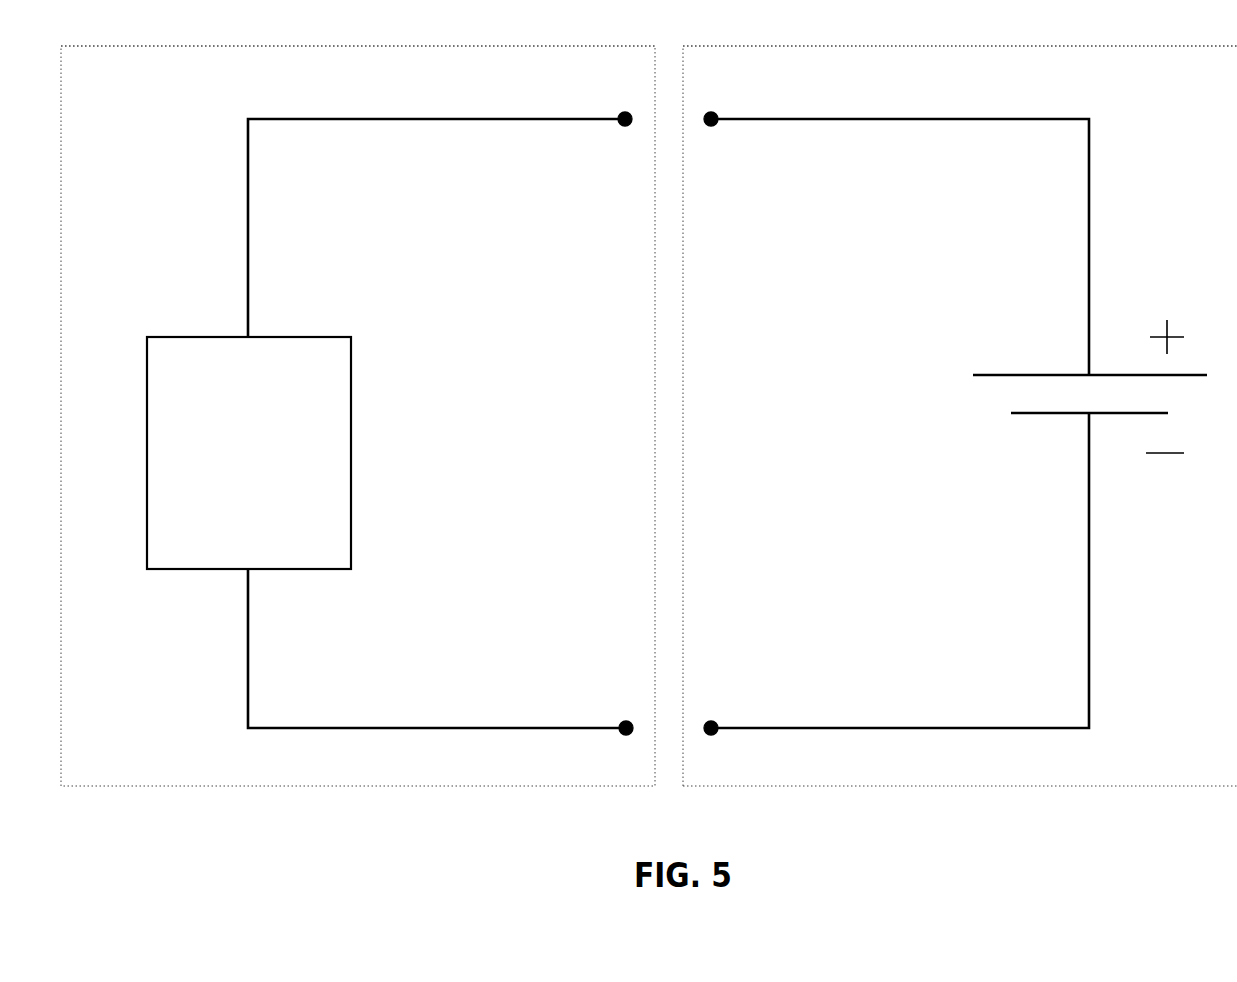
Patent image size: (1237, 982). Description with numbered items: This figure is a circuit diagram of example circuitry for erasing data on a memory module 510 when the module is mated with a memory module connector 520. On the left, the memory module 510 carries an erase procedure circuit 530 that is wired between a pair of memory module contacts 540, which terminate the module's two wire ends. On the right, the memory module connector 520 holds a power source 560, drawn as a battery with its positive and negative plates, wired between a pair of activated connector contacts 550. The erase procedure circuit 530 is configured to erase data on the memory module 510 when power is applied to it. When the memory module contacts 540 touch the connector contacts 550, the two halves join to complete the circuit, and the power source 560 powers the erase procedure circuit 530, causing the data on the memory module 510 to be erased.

The memory module 510 is at (361, 95).
The memory module connector 520 is at (1001, 95).
The erase procedure circuit 530 is at (178, 335).
The memory module contacts 540 is at (623, 112).
The connector contacts 550 is at (713, 112).
The power source 560 is at (986, 343).